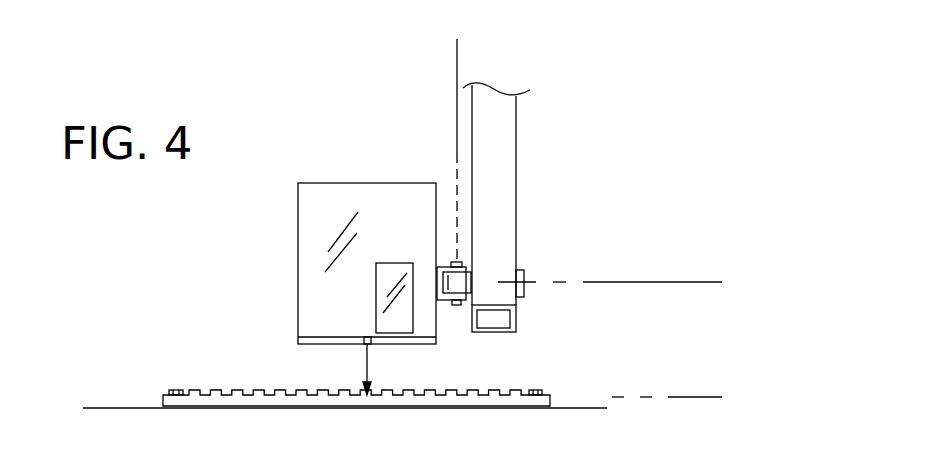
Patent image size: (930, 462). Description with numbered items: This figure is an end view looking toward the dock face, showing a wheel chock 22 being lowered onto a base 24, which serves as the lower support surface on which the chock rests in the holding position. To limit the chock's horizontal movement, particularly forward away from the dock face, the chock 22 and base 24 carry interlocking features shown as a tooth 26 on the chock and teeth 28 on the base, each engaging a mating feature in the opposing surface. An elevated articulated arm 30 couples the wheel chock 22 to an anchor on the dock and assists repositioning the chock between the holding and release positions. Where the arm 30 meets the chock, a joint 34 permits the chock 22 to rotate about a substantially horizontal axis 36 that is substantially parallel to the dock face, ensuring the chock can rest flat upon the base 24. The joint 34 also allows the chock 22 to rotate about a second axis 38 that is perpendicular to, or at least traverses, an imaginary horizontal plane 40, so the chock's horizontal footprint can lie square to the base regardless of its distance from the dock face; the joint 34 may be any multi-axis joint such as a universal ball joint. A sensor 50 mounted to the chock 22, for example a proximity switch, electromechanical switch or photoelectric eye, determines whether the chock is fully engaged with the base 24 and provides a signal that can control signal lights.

The wheel chock 22 is at (333, 183).
The base 24 is at (160, 404).
The tooth 26 is at (362, 345).
The tooth 28 is at (218, 391).
The elevated articulated arm 30 is at (516, 170).
The joint 34 is at (454, 328).
The horizontal axis 36 is at (665, 282).
The second axis 38 is at (457, 112).
The imaginary horizontal plane 40 is at (713, 397).
The sensor 50 is at (376, 306).